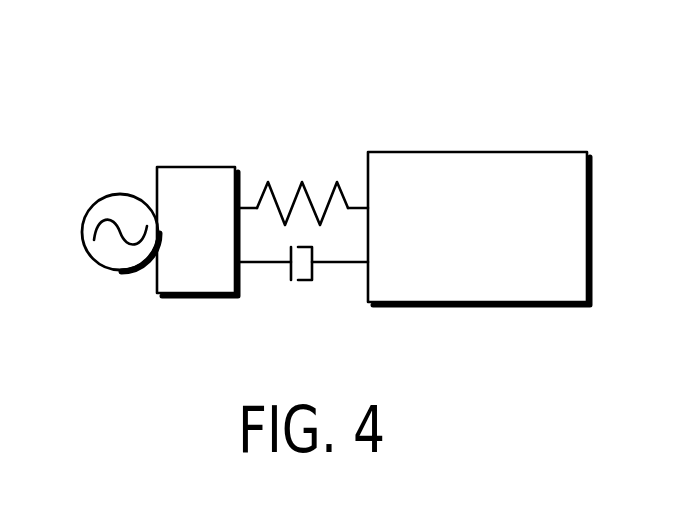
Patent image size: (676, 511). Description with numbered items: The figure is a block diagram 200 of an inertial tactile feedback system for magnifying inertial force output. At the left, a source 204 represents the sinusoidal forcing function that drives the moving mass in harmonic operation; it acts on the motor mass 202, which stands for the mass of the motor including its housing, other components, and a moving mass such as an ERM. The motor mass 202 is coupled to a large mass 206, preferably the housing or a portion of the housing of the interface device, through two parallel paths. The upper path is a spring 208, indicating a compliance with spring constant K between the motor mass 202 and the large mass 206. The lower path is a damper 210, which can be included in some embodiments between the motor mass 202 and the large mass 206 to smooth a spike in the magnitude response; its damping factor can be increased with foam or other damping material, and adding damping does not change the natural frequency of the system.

The block diagram 200 is at (367, 80).
The motor mass 202 is at (218, 257).
The source 204 is at (84, 218).
The large mass 206 is at (496, 266).
The spring 208 is at (297, 190).
The damper 210 is at (310, 281).